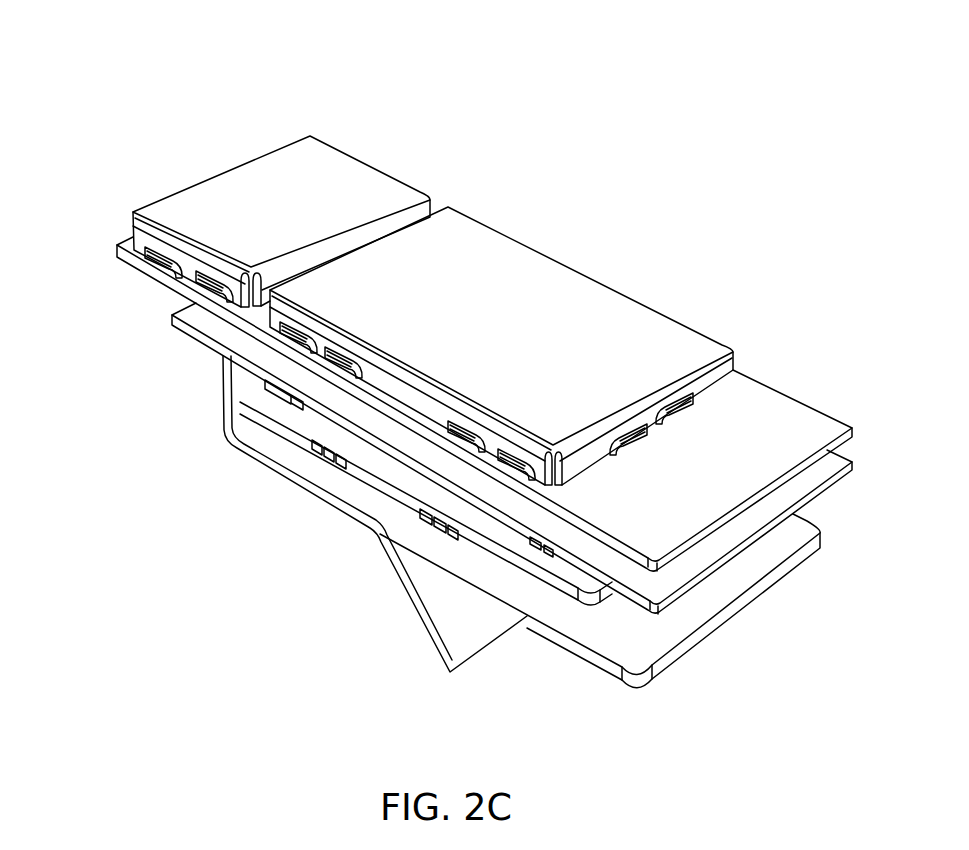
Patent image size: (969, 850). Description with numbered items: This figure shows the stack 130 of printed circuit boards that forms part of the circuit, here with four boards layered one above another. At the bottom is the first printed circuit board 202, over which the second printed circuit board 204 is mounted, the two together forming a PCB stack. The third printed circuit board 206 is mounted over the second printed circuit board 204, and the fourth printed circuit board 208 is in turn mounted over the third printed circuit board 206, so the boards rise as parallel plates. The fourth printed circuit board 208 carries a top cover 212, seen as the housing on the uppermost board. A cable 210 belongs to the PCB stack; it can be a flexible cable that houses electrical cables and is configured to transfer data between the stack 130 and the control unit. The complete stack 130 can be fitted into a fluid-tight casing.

The stack 130 is at (152, 43).
The first printed circuit board 202 is at (560, 642).
The second printed circuit board 204 is at (412, 478).
The third printed circuit board 206 is at (333, 395).
The fourth printed circuit board 208 is at (807, 405).
The cable 210 is at (410, 603).
The top cover 212 is at (222, 168).